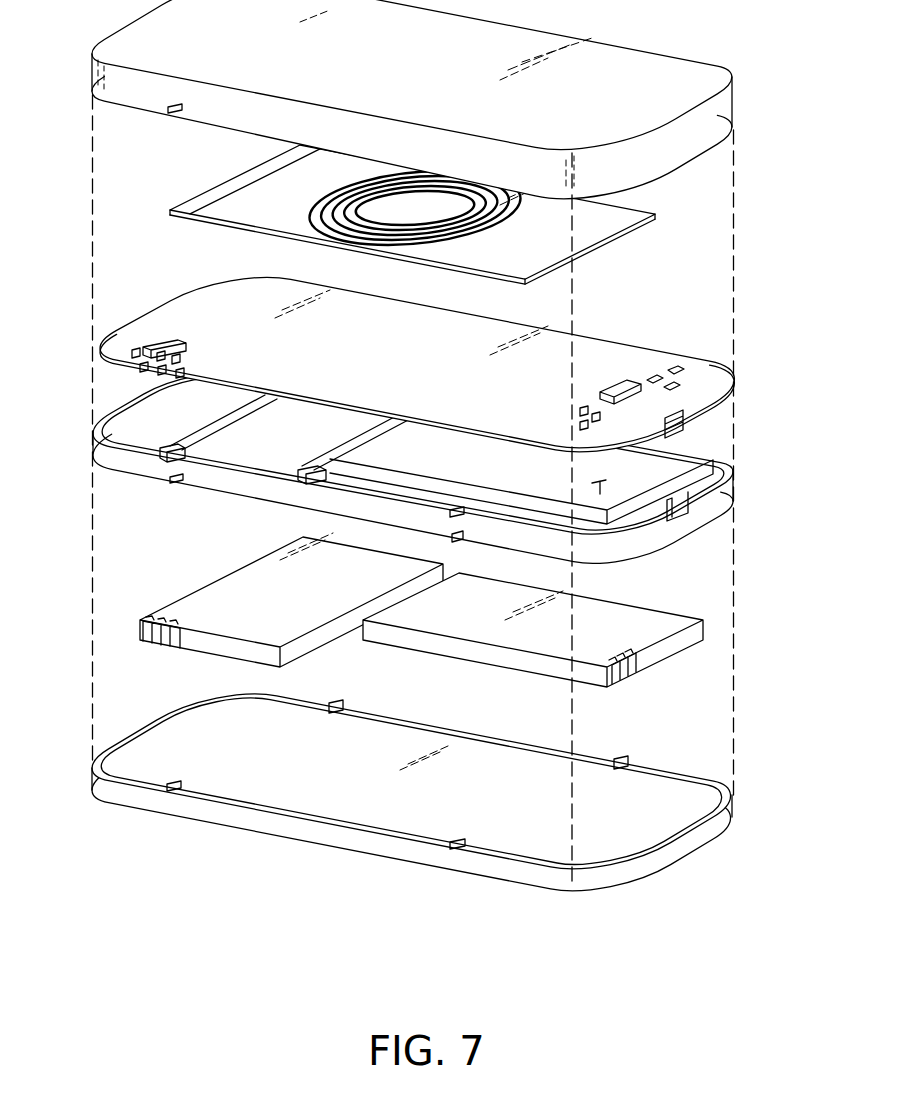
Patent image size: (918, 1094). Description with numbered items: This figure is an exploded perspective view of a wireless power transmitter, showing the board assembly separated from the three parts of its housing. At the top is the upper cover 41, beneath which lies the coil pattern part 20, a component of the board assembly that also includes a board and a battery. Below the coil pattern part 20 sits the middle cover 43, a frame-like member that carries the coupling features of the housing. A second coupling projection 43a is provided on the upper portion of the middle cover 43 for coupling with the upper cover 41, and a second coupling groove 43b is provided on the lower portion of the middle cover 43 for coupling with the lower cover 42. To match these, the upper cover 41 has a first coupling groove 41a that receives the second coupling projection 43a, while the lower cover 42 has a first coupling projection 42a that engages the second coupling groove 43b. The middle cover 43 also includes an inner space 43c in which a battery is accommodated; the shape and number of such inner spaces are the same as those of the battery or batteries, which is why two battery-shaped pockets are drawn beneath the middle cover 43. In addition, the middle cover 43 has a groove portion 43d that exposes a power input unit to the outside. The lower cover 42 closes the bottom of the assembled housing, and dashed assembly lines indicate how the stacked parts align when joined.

The upper cover 41 is at (728, 106).
The first coupling groove 41a is at (174, 114).
The coil pattern part 20 is at (632, 215).
The middle cover 43 is at (417, 480).
The second coupling projection 43a is at (107, 450).
The second coupling groove 43b is at (172, 483).
The inner space 43c is at (600, 492).
The groove portion 43d is at (689, 522).
The lower cover 42 is at (712, 835).
The first coupling projection 42a is at (448, 852).